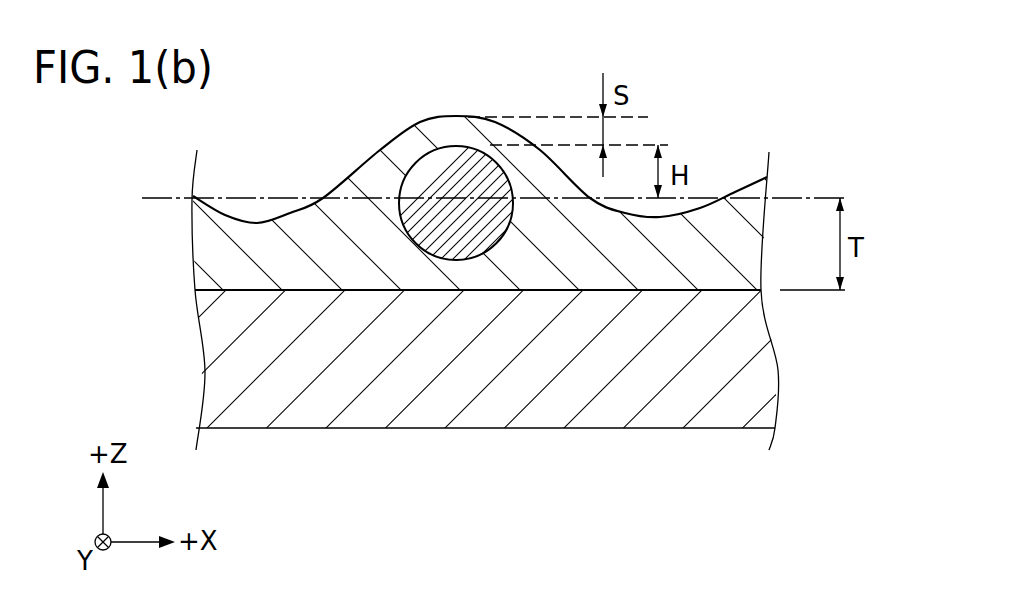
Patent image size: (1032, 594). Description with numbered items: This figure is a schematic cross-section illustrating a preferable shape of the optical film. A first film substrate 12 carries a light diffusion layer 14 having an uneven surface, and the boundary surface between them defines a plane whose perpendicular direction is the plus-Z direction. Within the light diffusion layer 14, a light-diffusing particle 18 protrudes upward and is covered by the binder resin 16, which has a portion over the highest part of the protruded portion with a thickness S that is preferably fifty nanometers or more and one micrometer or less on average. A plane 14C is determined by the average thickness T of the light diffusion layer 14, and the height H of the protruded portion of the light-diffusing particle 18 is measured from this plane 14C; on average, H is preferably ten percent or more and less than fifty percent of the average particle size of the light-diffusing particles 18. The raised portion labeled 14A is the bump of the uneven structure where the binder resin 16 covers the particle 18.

The first film substrate 12 is at (762, 367).
The light diffusion layer 14 is at (880, 117).
The convex portion 14A is at (353, 171).
The plane determined by the average thickness of the light diffusion layer 14C is at (247, 197).
The binder resin 16 is at (723, 233).
The light-diffusing particles 18 is at (443, 163).